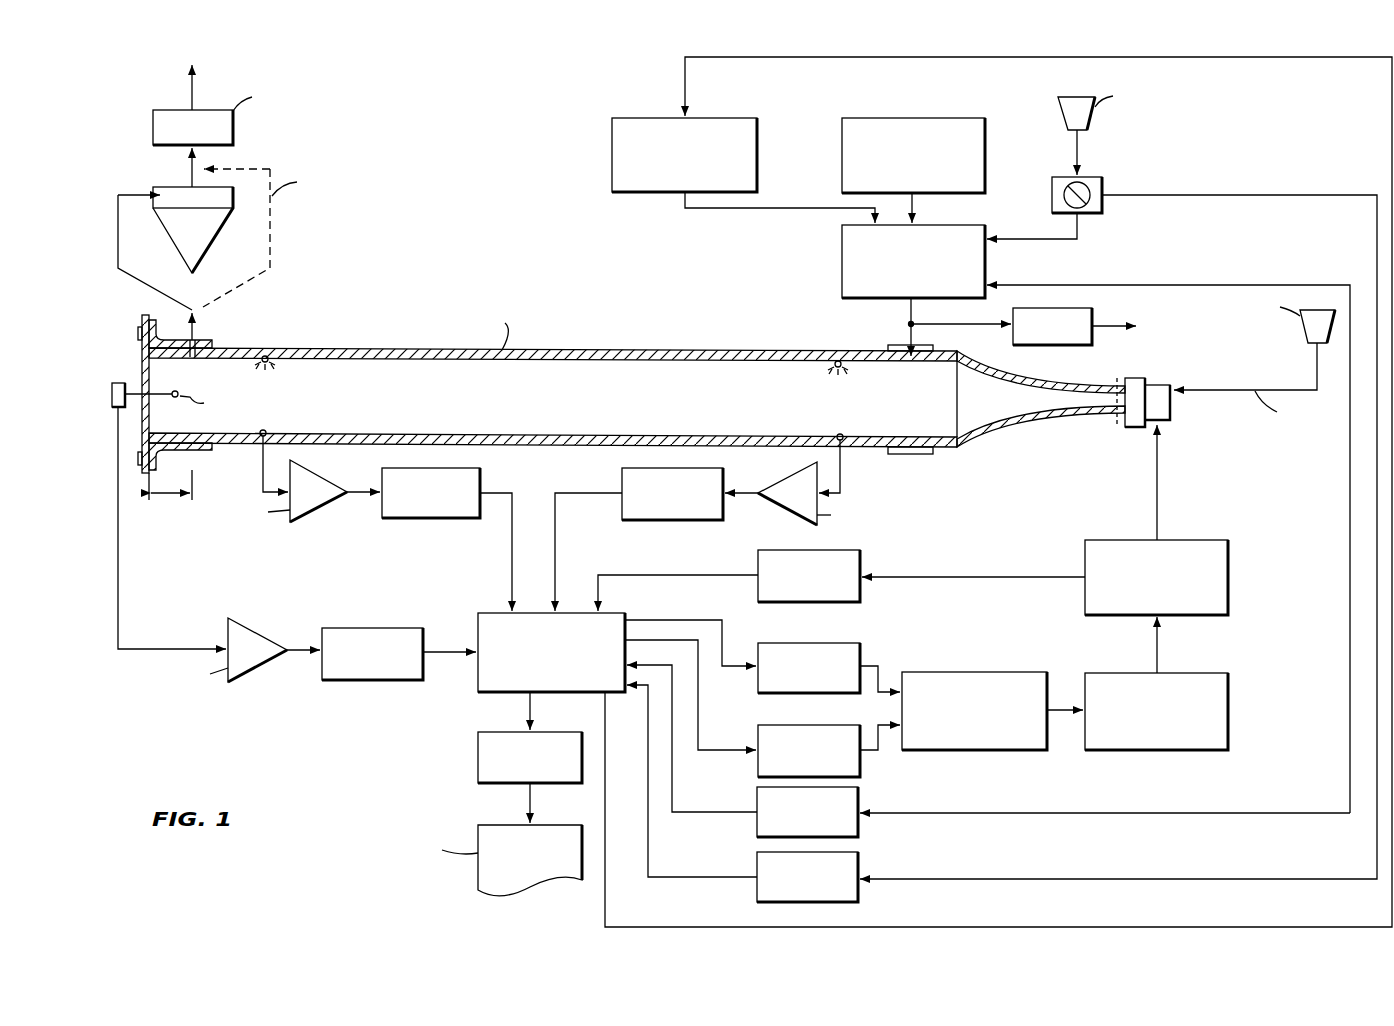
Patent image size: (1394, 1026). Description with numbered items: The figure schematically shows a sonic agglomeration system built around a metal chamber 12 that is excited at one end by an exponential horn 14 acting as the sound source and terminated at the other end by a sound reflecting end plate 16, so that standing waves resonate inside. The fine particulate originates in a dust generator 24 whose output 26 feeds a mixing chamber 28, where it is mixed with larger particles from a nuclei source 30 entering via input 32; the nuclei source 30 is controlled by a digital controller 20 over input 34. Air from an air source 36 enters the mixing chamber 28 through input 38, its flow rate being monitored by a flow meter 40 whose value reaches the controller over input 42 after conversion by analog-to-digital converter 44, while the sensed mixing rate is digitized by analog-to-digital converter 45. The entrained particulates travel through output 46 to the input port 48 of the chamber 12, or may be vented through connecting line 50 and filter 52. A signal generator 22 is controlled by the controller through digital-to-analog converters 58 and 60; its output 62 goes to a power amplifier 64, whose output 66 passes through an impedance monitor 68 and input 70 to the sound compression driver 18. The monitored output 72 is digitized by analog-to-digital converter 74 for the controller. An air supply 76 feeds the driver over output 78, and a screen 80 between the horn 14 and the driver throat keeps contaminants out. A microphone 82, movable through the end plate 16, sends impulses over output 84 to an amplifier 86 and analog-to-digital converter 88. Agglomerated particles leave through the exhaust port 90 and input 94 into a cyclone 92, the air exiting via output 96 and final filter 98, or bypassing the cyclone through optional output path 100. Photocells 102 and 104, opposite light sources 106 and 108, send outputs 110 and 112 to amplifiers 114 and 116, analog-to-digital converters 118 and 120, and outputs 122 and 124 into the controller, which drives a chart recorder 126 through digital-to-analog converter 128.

The metal chamber 12 is at (648, 364).
The exponential horn 14 is at (997, 422).
The sound reflecting plate 16 is at (142, 345).
The sound compression driver 18 is at (1140, 378).
The digital controller 20 is at (483, 613).
The signal generator 22 is at (972, 672).
The dust generator 24 is at (940, 118).
The output 26 is at (914, 206).
The mixing chamber 28 is at (842, 247).
The nuclei source 30 is at (612, 126).
The input 32 is at (706, 209).
The input 34 is at (778, 58).
The air source 36 is at (1060, 102).
The input 38 is at (1073, 143).
The flow meter 40 is at (1100, 177).
The input 42 is at (1295, 195).
The analog-to-digital converter 44 is at (757, 860).
The analog-to-digital converter 45 is at (852, 826).
The output 46 is at (905, 313).
The input port 48 is at (918, 362).
The connecting line 50 is at (960, 325).
The filter 52 is at (1092, 316).
The digital-to-analog converter 58 is at (843, 643).
The digital-to-analog converter 60 is at (852, 766).
The output 62 is at (1062, 710).
The power amplifier 64 is at (1196, 673).
The output 66 is at (1155, 637).
The impedance monitor 68 is at (1219, 540).
The input 70 is at (1160, 485).
The monitored output 72 is at (995, 577).
The analog-to-digital converter 74 is at (860, 562).
The air supply 76 is at (1300, 330).
The output 78 is at (1317, 371).
The screen 80 is at (1112, 422).
The microphone 82 is at (121, 383).
The output 84 is at (120, 606).
The amplifier 86 is at (254, 630).
The analog-to-digital converter 88 is at (373, 628).
The exhaust port 90 is at (203, 328).
The cyclone 92 is at (176, 187).
The input 94 is at (118, 217).
The output 96 is at (196, 165).
The final filter 98 is at (206, 138).
The optional output path 100 is at (272, 232).
The photocell 102 is at (260, 445).
The photocell 104 is at (843, 434).
The light source 106 is at (275, 362).
The light source 108 is at (830, 366).
The output 110 is at (262, 481).
The output 112 is at (843, 479).
The amplifier 114 is at (326, 486).
The amplifier 116 is at (790, 485).
The analog-to-digital converter 118 is at (480, 470).
The analog-to-digital converter 120 is at (620, 474).
The output 122 is at (511, 546).
The output 124 is at (556, 546).
The chart recorder 126 is at (544, 865).
The digital-to-analog converter 128 is at (478, 755).